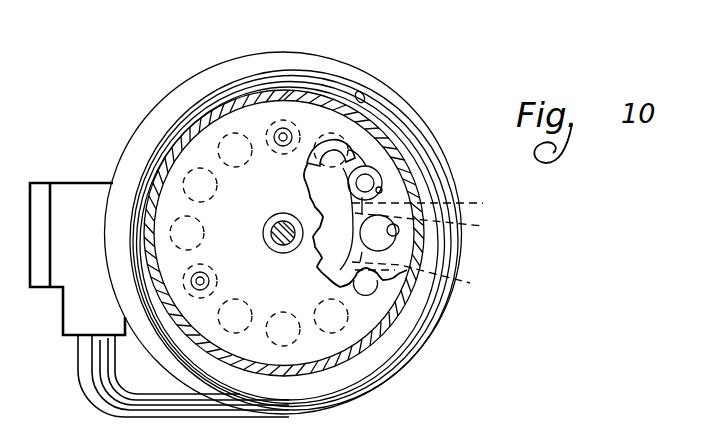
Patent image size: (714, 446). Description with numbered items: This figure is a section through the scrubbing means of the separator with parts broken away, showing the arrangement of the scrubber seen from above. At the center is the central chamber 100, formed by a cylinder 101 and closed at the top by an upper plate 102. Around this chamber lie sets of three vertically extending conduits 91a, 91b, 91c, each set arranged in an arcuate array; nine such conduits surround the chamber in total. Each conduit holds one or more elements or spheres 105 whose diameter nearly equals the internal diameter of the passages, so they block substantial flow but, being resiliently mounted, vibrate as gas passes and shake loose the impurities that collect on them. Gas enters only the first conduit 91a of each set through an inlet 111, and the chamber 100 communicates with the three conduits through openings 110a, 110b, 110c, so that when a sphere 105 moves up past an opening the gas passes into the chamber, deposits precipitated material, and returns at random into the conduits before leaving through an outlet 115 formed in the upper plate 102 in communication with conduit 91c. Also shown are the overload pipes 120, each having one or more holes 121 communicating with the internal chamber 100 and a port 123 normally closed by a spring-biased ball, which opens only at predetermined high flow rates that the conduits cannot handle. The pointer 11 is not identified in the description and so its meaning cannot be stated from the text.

The cam lever plate 11 is at (356, 160).
The conduit 91a is at (383, 175).
The conduit 91b is at (399, 233).
The conduit 91c is at (375, 288).
The central chamber 100 is at (313, 250).
The cylinder 101 is at (305, 168).
The upper plate 102 is at (280, 202).
The elements or spheres 105 is at (267, 137).
The opening 110a is at (441, 206).
The opening 110b is at (443, 227).
The opening 110c is at (434, 282).
The inlet 111 is at (385, 147).
The outlet 115 is at (274, 128).
The overload pipes 120 is at (163, 205).
The holes 121 is at (318, 125).
The port 123 is at (335, 146).